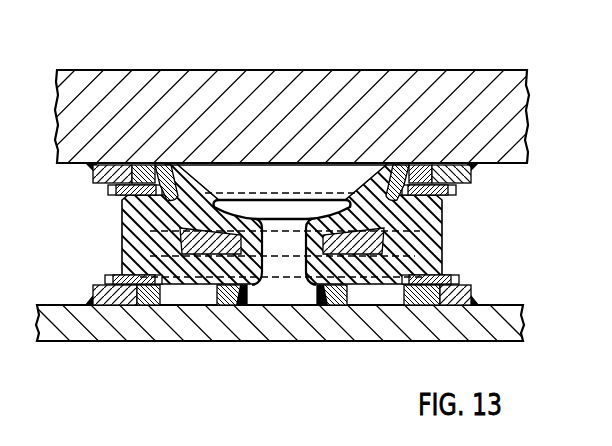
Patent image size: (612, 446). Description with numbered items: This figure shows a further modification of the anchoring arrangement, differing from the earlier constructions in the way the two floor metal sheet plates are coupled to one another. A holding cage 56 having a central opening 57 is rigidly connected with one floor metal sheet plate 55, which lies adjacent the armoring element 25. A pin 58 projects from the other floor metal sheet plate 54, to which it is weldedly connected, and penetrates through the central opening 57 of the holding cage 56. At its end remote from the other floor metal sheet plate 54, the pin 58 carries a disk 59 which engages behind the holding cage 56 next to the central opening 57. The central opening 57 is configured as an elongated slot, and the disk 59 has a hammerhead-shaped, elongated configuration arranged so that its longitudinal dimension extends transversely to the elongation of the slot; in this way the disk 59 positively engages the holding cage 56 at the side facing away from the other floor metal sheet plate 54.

The armoring element 25 is at (141, 87).
The other floor metal sheet plate 54 is at (417, 290).
The one floor metal sheet plate 55 is at (410, 188).
The holding cage 56 is at (378, 248).
The central opening 57 is at (266, 262).
The pin 58 is at (292, 262).
The disk 59 is at (287, 203).